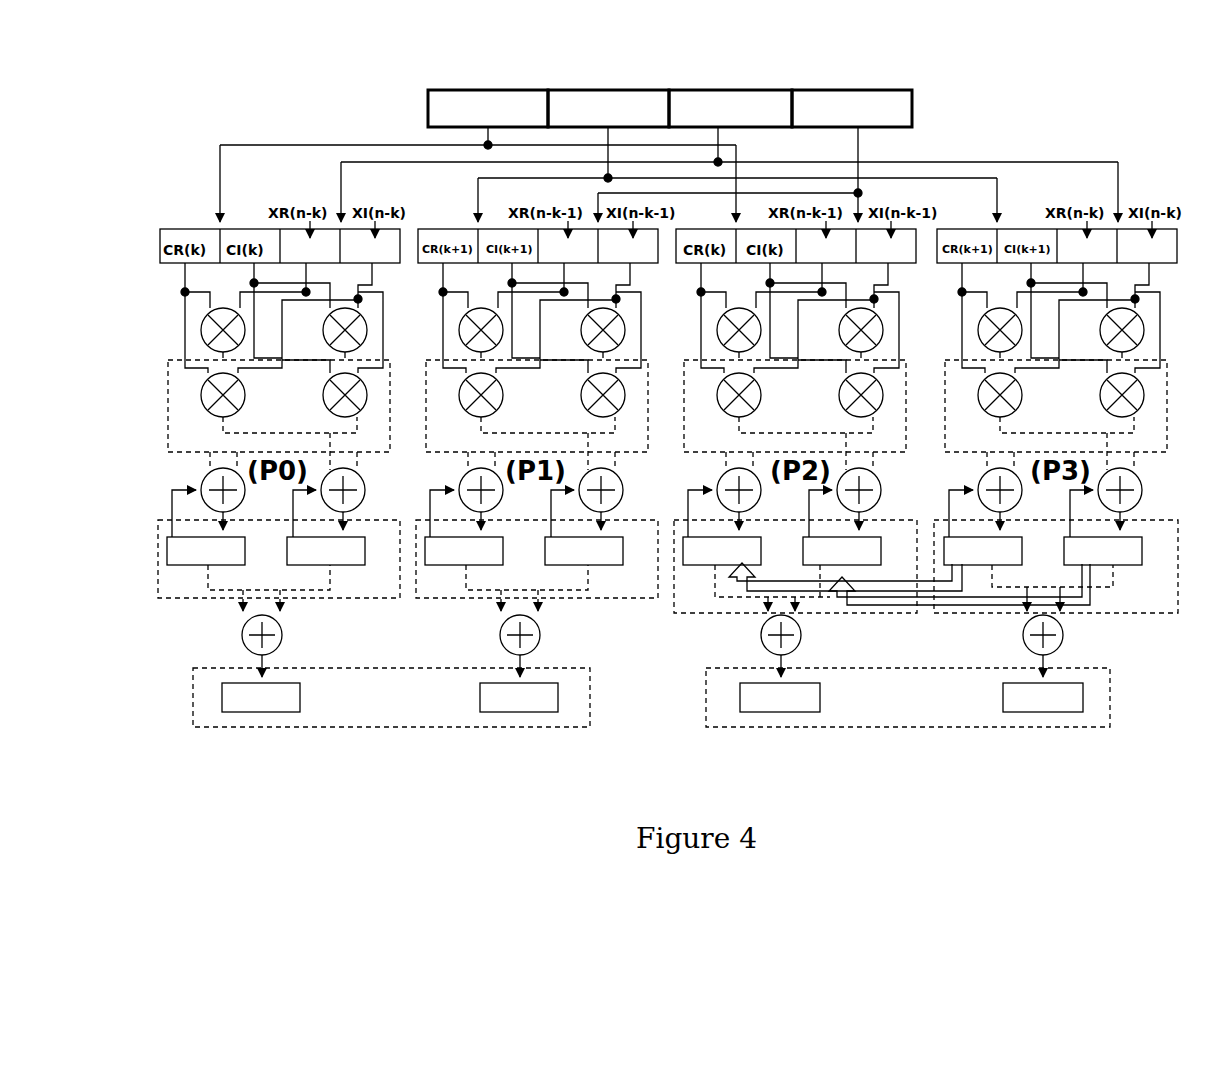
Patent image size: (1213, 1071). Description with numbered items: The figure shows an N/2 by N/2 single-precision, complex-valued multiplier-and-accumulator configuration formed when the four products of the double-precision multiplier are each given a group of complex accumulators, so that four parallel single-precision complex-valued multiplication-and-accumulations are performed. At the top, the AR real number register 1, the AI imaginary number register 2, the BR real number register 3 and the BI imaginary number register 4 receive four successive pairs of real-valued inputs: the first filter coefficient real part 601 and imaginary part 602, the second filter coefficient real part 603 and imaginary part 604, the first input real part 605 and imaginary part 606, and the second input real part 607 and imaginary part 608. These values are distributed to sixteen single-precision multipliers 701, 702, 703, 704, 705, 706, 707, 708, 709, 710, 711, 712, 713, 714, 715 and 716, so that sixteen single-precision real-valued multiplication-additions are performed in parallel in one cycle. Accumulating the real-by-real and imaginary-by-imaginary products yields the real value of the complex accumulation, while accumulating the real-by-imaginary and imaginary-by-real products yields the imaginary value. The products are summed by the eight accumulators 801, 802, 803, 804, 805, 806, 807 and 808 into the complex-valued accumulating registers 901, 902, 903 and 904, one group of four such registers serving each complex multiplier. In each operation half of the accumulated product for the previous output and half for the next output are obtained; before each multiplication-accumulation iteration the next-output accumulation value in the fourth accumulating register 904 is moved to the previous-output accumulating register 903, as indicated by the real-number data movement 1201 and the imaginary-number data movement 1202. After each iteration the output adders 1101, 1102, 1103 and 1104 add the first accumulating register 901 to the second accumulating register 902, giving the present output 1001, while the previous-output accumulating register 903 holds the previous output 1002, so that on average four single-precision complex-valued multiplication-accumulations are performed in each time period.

The AR real number register 1 is at (440, 100).
The AI imaginary number register 2 is at (590, 100).
The BR real number register 3 is at (770, 115).
The BI imaginary number register 4 is at (905, 100).
The CR(k) filter coefficient real number part 601 is at (460, 45).
The CI(k) filter coefficient imaginary number part 602 is at (503, 62).
The CR(k+1) filter coefficient real number part 603 is at (600, 45).
The CI(k+1) filter coefficient imaginary number part 604 is at (645, 62).
The XR(n−k) input real number part 605 is at (718, 45).
The XI(n−k) input imaginary number part 606 is at (768, 62).
The XR(n−k−1) input real number part 607 is at (840, 45).
The XI(n−k−1) input imaginary number part 608 is at (895, 62).
The A0 single-precision multiplier 701 is at (185, 318).
The A1 single-precision multiplier 702 is at (303, 314).
The A2 single-precision multiplier 703 is at (185, 385).
The A3 single-precision multiplier 704 is at (320, 393).
The A4 single-precision multiplier 705 is at (443, 318).
The A5 single-precision multiplier 706 is at (561, 314).
The A6 single-precision multiplier 707 is at (443, 385).
The A7 single-precision multiplier 708 is at (578, 393).
The A8 single-precision multiplier 709 is at (701, 318).
The A9 single-precision multiplier 710 is at (819, 314).
The A10 single-precision multiplier 711 is at (701, 385).
The A11 single-precision multiplier 712 is at (836, 393).
The A12 single-precision multiplier 713 is at (962, 318).
The A13 single-precision multiplier 714 is at (1080, 314).
The A14 single-precision multiplier 715 is at (962, 385).
The A15 single-precision multiplier 716 is at (1097, 393).
The B0 accumulator 801 is at (182, 477).
The B1 accumulator 802 is at (383, 468).
The B2 accumulator 803 is at (441, 484).
The B3 accumulator 804 is at (640, 466).
The B4 accumulator 805 is at (698, 478).
The B5 accumulator 806 is at (900, 466).
The B6 accumulator 807 is at (955, 478).
The B7 accumulator 808 is at (1150, 475).
The acc0 complex-valued accumulating register 901 is at (358, 591).
The acc1 complex-valued accumulating register 902 is at (618, 591).
The acc2 complex-valued accumulating register 903 is at (873, 567).
The acc3 complex-valued accumulating register 904 is at (1133, 591).
The Y(n) output 1001 is at (400, 713).
The Y(n−1) output 1002 is at (935, 715).
The S0 output adder 1101 is at (210, 639).
The S1 output adder 1102 is at (467, 639).
The S2 output adder 1103 is at (729, 639).
The S3 output adder 1104 is at (990, 639).
The real-number data movement 1201 is at (908, 583).
The imaginary-number data movement 1202 is at (1083, 607).